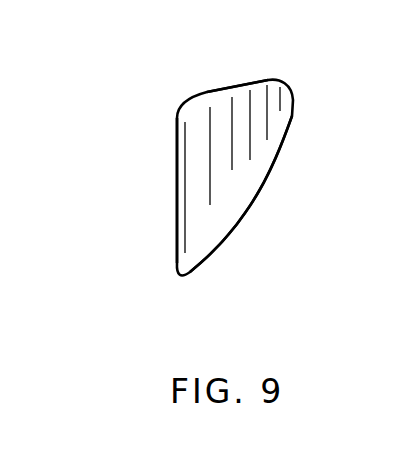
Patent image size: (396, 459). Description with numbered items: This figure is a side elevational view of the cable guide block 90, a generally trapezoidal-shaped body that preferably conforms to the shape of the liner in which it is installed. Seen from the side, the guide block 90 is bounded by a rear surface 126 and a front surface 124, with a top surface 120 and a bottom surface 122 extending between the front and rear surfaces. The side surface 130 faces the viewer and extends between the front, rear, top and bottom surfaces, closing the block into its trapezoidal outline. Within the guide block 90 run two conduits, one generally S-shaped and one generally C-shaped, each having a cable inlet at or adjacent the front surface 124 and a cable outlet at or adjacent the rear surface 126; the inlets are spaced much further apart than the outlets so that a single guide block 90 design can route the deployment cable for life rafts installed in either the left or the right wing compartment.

The cable guide block 90 is at (160, 108).
The top surface 120 is at (177, 207).
The bottom surface 122 is at (275, 162).
The front surface 124 is at (212, 250).
The rear surface 126 is at (240, 81).
The side surface 130 is at (228, 188).